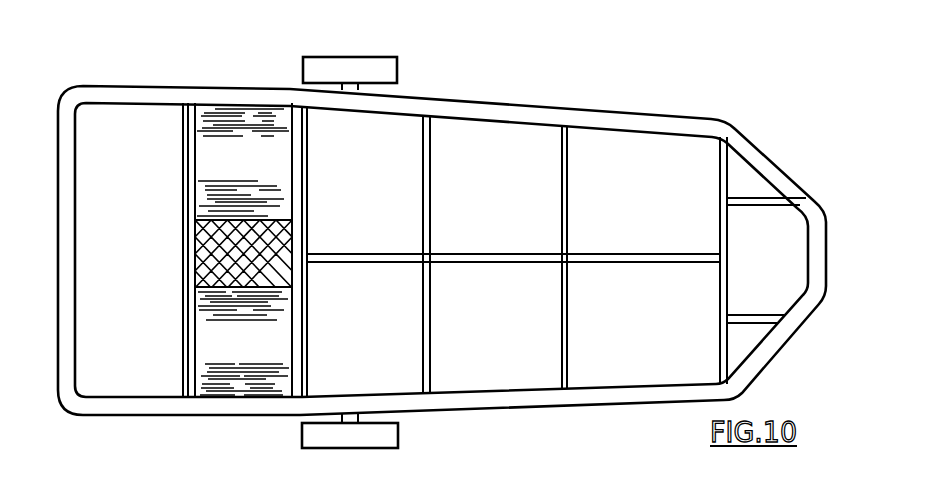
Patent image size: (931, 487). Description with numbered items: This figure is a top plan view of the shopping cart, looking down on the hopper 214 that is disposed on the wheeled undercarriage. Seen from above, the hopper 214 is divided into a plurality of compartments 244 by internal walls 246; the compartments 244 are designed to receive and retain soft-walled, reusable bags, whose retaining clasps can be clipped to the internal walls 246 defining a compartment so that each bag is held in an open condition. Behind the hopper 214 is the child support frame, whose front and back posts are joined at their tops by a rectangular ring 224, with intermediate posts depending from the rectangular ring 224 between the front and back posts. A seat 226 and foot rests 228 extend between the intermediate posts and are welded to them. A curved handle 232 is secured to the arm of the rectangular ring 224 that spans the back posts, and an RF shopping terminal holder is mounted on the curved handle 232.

The hopper 214 is at (536, 153).
The rectangular ring 224 is at (196, 150).
The seat 226 is at (250, 212).
The foot rests 228 is at (268, 348).
The curved handle 232 is at (76, 282).
The compartments 244 is at (462, 133).
The internal walls 246 is at (432, 168).